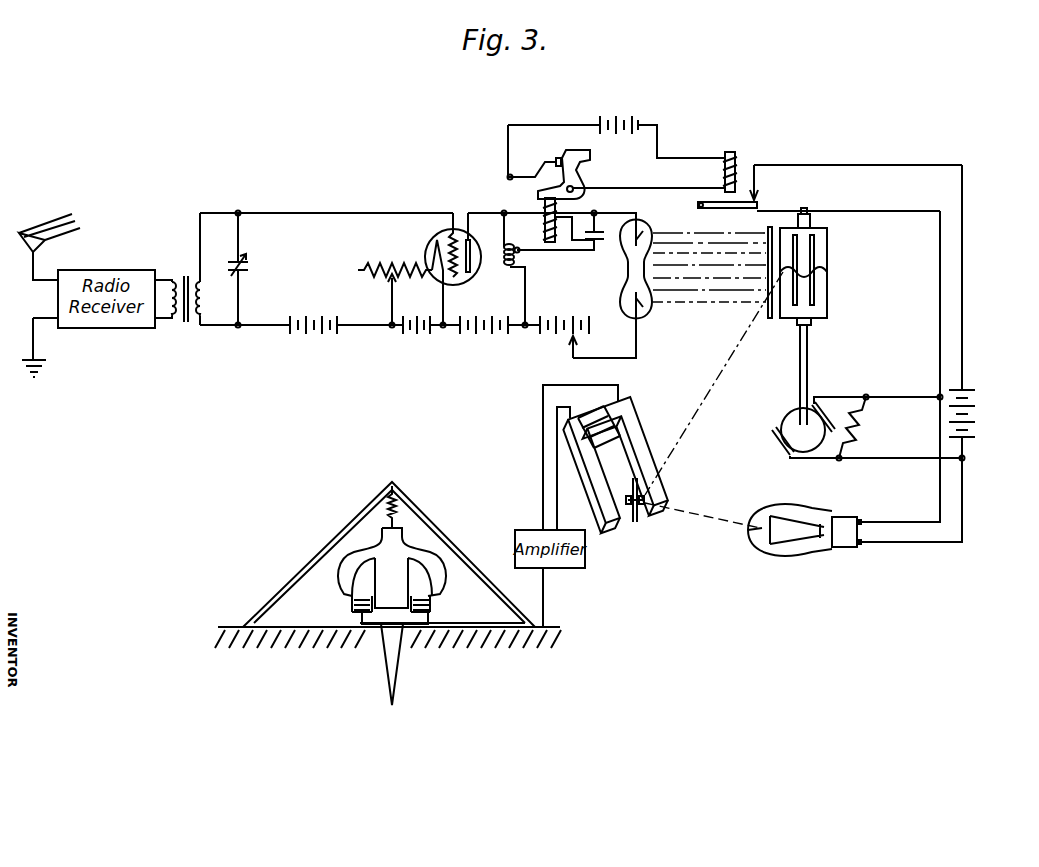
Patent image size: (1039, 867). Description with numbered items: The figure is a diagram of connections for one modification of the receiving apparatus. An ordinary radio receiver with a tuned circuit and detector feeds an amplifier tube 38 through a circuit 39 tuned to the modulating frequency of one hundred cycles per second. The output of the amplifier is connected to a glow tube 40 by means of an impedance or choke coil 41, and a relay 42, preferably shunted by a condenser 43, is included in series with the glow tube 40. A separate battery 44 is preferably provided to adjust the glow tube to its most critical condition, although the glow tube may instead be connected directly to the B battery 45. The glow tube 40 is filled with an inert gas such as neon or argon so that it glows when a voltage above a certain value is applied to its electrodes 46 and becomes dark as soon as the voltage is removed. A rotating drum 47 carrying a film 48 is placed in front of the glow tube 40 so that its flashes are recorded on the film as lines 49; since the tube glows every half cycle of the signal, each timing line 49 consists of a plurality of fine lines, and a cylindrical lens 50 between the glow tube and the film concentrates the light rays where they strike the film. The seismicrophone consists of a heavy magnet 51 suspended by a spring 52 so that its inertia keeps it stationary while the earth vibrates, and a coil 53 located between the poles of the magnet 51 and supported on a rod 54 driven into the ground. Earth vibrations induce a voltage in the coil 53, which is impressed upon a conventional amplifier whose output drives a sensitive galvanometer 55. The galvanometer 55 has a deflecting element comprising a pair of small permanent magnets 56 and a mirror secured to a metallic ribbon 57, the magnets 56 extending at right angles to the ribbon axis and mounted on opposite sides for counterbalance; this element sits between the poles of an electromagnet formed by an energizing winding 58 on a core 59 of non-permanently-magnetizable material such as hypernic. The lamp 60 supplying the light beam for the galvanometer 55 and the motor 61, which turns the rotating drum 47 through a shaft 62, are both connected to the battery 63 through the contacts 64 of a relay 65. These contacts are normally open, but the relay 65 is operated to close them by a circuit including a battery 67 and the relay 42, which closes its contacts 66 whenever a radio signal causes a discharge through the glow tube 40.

The amplifier tube 38 is at (428, 240).
The circuit 39 is at (224, 318).
The glow tube 40 is at (638, 271).
The impedance or choke coil 41 is at (510, 270).
The relay 42 is at (543, 200).
The condenser 43 is at (600, 240).
The separate battery 44 is at (545, 333).
The B battery 45 is at (480, 333).
The electrodes 46 is at (645, 232).
The rotating drum 47 is at (815, 323).
The film 48 is at (824, 276).
The lines 49 is at (797, 240).
The cylindrical lens 50 is at (776, 320).
The heavy magnet 51 is at (346, 595).
The spring 52 is at (398, 502).
The coil 53 is at (432, 606).
The rod 54 is at (400, 660).
The sensitive galvanometer 55 is at (626, 462).
The small permanent magnets 56 is at (634, 488).
The metallic ribbon 57 is at (635, 523).
The energizing winding 58 is at (622, 404).
The core 59 is at (640, 428).
The lamp 60 is at (785, 553).
The motor 61 is at (790, 420).
The shaft 62 is at (807, 375).
The battery 63 is at (976, 412).
The contacts 64 is at (762, 200).
The relay 65 is at (737, 158).
The contacts 66 is at (557, 162).
The battery 67 is at (618, 118).